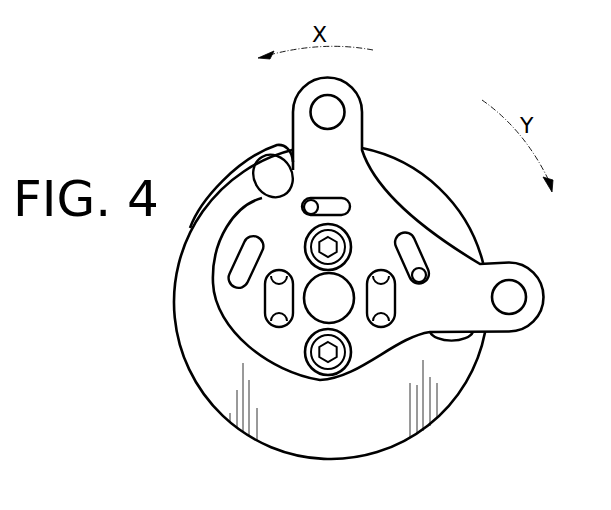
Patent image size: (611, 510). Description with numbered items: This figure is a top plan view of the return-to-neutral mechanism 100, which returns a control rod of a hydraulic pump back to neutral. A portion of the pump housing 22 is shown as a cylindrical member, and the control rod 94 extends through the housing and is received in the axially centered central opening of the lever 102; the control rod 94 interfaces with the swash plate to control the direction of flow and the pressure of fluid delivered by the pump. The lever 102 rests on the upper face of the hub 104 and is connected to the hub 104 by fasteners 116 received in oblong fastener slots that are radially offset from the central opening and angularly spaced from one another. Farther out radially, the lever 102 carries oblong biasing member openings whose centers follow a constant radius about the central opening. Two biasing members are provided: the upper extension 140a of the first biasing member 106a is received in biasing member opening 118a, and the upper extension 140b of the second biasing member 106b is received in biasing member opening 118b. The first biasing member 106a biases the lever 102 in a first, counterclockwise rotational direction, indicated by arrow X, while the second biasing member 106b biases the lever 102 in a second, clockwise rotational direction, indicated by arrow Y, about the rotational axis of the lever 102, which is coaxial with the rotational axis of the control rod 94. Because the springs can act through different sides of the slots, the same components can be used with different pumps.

The return-to-neutral mechanism 100 is at (423, 81).
The lever 102 is at (378, 215).
The hub 104 is at (270, 304).
The first biasing member 106a is at (277, 143).
The second biasing member 106b is at (457, 341).
The fasteners 116 is at (382, 214).
The biasing member opening 118a is at (331, 200).
The biasing member opening 118b is at (410, 250).
The upper extension 140a is at (304, 203).
The upper extension 140b is at (430, 285).
The pump housing 22 is at (463, 247).
The control rod 94 is at (333, 303).